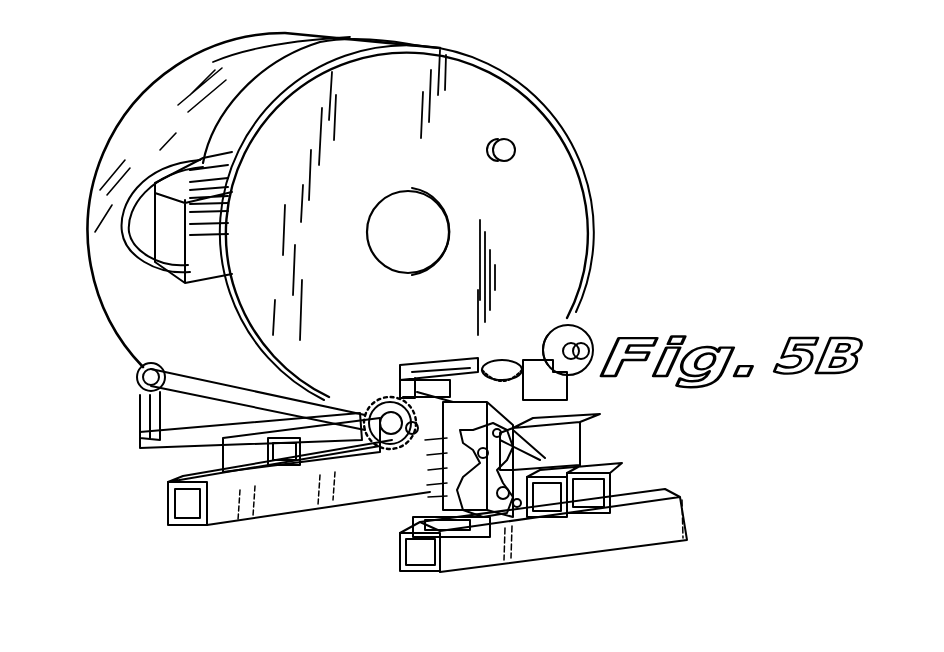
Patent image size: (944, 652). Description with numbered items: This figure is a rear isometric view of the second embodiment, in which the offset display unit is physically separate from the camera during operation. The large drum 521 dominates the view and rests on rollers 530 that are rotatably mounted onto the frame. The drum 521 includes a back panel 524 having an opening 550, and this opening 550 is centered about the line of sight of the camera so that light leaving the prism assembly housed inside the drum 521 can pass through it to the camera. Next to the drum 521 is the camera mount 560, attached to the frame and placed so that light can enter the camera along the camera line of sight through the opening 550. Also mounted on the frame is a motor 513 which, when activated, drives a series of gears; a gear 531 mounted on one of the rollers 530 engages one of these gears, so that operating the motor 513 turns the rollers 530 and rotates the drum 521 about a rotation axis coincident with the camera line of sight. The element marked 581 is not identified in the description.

The drum 521 is at (185, 343).
The back panel 524 is at (538, 153).
The opening 550 is at (397, 186).
The mounting bracket 581 is at (445, 358).
The camera mount 560 is at (505, 365).
The rollers 530 is at (197, 388).
The gear 531 is at (397, 452).
The motor 513 is at (593, 460).